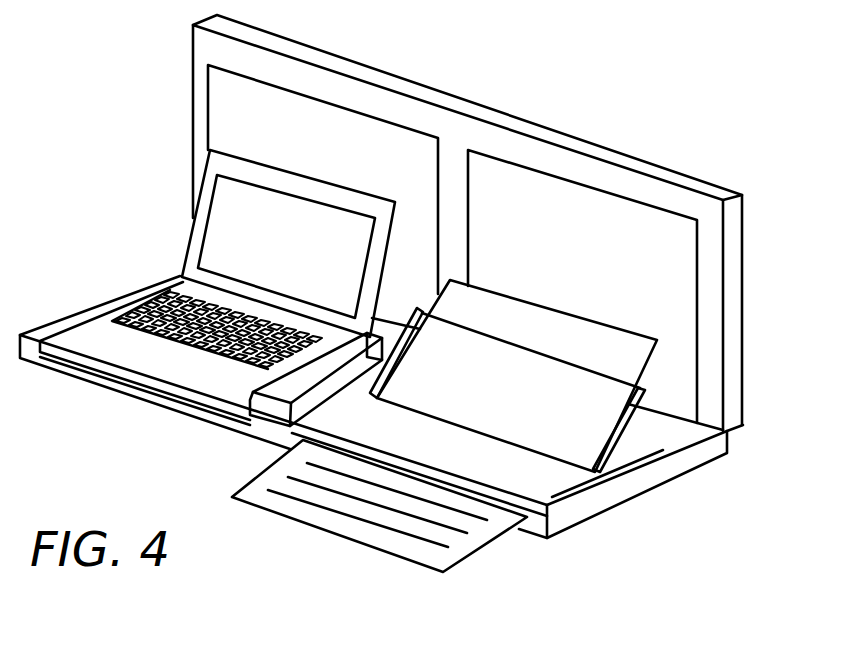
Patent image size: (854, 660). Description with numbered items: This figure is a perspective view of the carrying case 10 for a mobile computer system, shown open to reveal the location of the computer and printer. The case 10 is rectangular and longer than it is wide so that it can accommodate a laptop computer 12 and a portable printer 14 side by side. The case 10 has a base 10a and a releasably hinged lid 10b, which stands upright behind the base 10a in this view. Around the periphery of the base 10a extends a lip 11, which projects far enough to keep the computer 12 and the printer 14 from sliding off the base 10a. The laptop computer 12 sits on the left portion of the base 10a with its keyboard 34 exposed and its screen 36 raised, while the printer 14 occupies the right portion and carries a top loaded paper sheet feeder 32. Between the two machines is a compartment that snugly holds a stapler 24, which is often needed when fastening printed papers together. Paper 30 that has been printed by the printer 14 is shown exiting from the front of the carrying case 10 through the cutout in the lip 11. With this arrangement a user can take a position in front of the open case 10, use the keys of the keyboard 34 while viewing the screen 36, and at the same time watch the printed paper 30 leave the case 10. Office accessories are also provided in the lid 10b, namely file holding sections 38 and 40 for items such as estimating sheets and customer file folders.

The carrying case 10 is at (636, 147).
The base 10a is at (168, 408).
The lid 10b is at (453, 128).
The lip 11 is at (560, 525).
The laptop computer 12 is at (150, 348).
The portable printer 14 is at (565, 480).
The stapler 24 is at (285, 398).
The paper 30 is at (473, 533).
The top loaded paper sheet feeder 32 is at (632, 415).
The keyboard 34 is at (157, 300).
The screen 36 is at (227, 232).
The file holding section 38 is at (308, 125).
The file holding section 40 is at (667, 290).